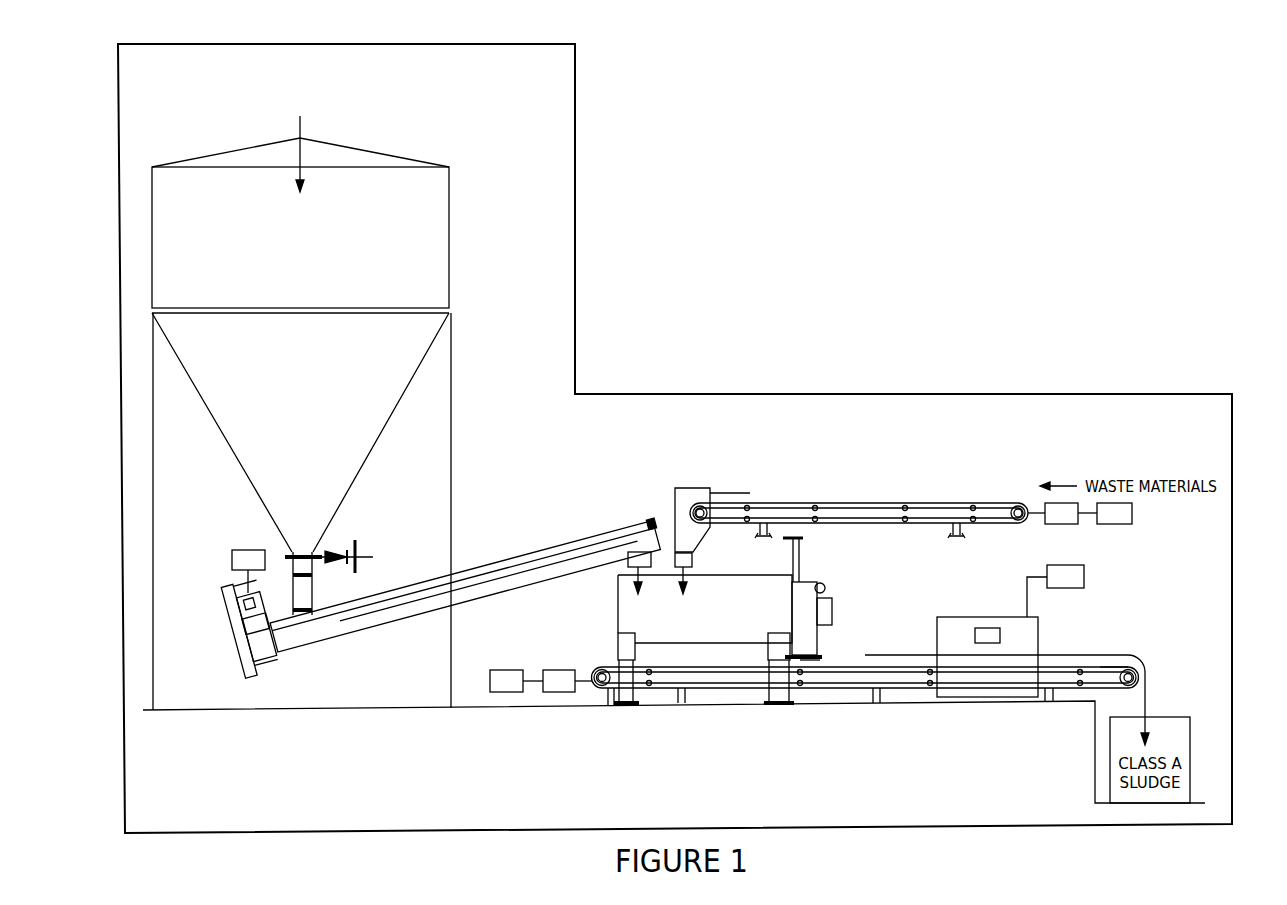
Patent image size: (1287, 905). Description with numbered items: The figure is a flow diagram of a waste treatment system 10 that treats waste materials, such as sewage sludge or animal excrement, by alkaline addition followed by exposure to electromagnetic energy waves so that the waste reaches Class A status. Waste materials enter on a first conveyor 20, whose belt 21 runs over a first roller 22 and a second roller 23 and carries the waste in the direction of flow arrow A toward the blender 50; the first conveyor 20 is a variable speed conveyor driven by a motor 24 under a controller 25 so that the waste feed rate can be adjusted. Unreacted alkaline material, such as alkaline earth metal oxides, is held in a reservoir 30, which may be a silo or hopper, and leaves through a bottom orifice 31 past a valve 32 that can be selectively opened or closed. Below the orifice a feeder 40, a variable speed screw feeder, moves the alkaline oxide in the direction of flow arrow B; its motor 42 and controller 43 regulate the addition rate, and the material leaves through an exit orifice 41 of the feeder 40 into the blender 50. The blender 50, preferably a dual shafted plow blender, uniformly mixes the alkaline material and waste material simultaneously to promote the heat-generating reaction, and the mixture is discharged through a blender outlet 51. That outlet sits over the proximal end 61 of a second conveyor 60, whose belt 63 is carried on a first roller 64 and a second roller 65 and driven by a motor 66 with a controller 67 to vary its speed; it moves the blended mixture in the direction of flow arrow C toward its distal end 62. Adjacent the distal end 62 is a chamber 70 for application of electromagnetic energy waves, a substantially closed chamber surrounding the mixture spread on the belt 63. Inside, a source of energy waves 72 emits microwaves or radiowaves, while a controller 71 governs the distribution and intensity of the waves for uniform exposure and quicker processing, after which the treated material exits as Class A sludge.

The waste treatment system 10 is at (783, 392).
The first conveyor 20 is at (785, 513).
The belt 21 is at (870, 502).
The first roller 22 is at (1020, 502).
The second roller 23 is at (687, 490).
The motor 24 is at (1053, 513).
The controller 25 is at (1105, 513).
The reservoir 30 is at (449, 281).
The bottom orifice 31 is at (287, 568).
The valve 32 is at (373, 557).
The feeder 40 is at (547, 548).
The exit orifice 41 is at (627, 563).
The motor 42 is at (232, 590).
The controller 43 is at (248, 571).
The blender 50 is at (617, 617).
The blender outlet 51 is at (827, 640).
The second conveyor 60 is at (592, 690).
The proximal end 61 is at (805, 662).
The distal end 62 is at (1113, 663).
The belt 63 is at (715, 690).
The first roller 64 is at (610, 690).
The second roller 65 is at (1137, 657).
The motor 66 is at (567, 681).
The controller 67 is at (516, 681).
The chamber for application of electromagnetic energy waves 70 is at (1038, 628).
The controller 71 is at (1084, 577).
The source of energy waves 72 is at (958, 617).